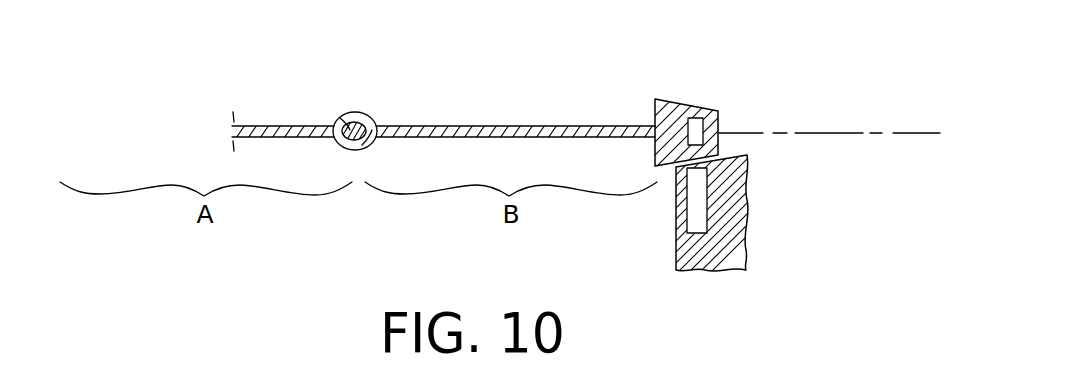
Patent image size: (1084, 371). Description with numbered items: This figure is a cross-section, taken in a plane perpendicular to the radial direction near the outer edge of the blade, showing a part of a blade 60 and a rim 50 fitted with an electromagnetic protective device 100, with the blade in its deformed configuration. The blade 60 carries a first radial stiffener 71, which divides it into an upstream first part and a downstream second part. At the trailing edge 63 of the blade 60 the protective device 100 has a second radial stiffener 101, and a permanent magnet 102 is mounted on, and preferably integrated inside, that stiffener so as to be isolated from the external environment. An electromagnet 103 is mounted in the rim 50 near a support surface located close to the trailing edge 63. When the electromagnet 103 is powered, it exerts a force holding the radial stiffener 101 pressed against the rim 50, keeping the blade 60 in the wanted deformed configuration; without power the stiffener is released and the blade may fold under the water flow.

The rim 50 is at (696, 220).
The blade 60 is at (485, 125).
The trailing edge 63 is at (681, 90).
The first radial stiffener 71 is at (345, 124).
The electromagnetic protective device 100 is at (801, 66).
The second radial stiffener 101 is at (670, 108).
The permanent magnet 102 is at (695, 125).
The electromagnet 103 is at (697, 210).